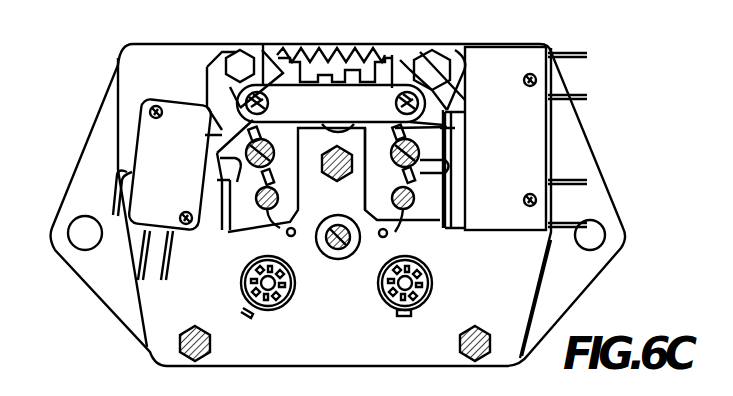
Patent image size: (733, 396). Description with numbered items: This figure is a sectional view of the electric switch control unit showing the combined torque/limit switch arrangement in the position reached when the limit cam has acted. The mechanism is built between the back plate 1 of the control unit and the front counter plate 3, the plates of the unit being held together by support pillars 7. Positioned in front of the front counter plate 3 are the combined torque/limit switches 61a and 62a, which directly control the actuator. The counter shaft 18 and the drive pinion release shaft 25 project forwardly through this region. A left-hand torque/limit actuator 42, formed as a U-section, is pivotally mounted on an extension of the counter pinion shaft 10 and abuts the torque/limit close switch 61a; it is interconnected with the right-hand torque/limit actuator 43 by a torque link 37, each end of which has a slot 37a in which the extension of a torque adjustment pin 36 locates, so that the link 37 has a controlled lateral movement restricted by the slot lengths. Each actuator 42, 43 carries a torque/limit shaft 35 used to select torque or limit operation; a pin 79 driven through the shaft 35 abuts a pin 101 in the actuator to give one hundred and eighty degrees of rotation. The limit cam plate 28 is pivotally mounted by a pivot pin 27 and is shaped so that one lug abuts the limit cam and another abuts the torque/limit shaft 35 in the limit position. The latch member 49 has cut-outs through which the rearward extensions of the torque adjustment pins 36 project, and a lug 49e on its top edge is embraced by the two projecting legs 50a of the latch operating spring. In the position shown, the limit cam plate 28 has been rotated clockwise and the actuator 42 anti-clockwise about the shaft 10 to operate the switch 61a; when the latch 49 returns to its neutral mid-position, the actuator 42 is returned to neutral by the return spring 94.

The back plate 1 is at (602, 208).
The front counter plate 3 is at (517, 285).
The support pillars 7 is at (340, 172).
The counter pinion shaft 10 is at (285, 230).
The counter shaft 18 is at (272, 288).
The drive pinion release shaft 25 is at (340, 248).
The pivot pin 27 is at (234, 50).
The limit cam plate 28 is at (213, 95).
The torque/limit shaft 35 is at (255, 165).
The torque adjustment pin 36 is at (396, 103).
The torque link 37 is at (440, 60).
The slot 37a is at (270, 90).
The torque/limit actuator 42 is at (244, 214).
The torque/limit actuator 43 is at (432, 232).
The latch member 49 is at (335, 33).
The lug 49e is at (331, 108).
The projecting legs 50a is at (380, 27).
The torque/limit switch 61a is at (145, 143).
The torque/limit switch 62a is at (535, 173).
The pin 79 is at (255, 197).
The return spring 94 is at (392, 87).
The pin 101 is at (220, 143).